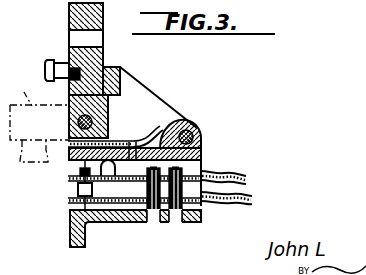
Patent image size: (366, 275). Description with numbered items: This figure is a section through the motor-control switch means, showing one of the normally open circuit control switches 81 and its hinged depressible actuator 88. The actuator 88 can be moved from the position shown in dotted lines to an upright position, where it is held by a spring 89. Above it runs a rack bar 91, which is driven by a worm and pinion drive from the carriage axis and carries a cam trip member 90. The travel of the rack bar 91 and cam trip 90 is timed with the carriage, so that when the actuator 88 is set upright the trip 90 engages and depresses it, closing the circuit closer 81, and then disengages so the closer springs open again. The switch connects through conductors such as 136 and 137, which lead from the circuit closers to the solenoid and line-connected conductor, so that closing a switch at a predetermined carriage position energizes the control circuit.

The rack bar 91 is at (70, 15).
The cam trip member 90 is at (70, 41).
The hinged depressible actuator 88 is at (63, 94).
The spring 89 is at (125, 130).
The circuit control switch 81 is at (72, 187).
The conductor 137 is at (218, 173).
The conductor 136 is at (214, 195).